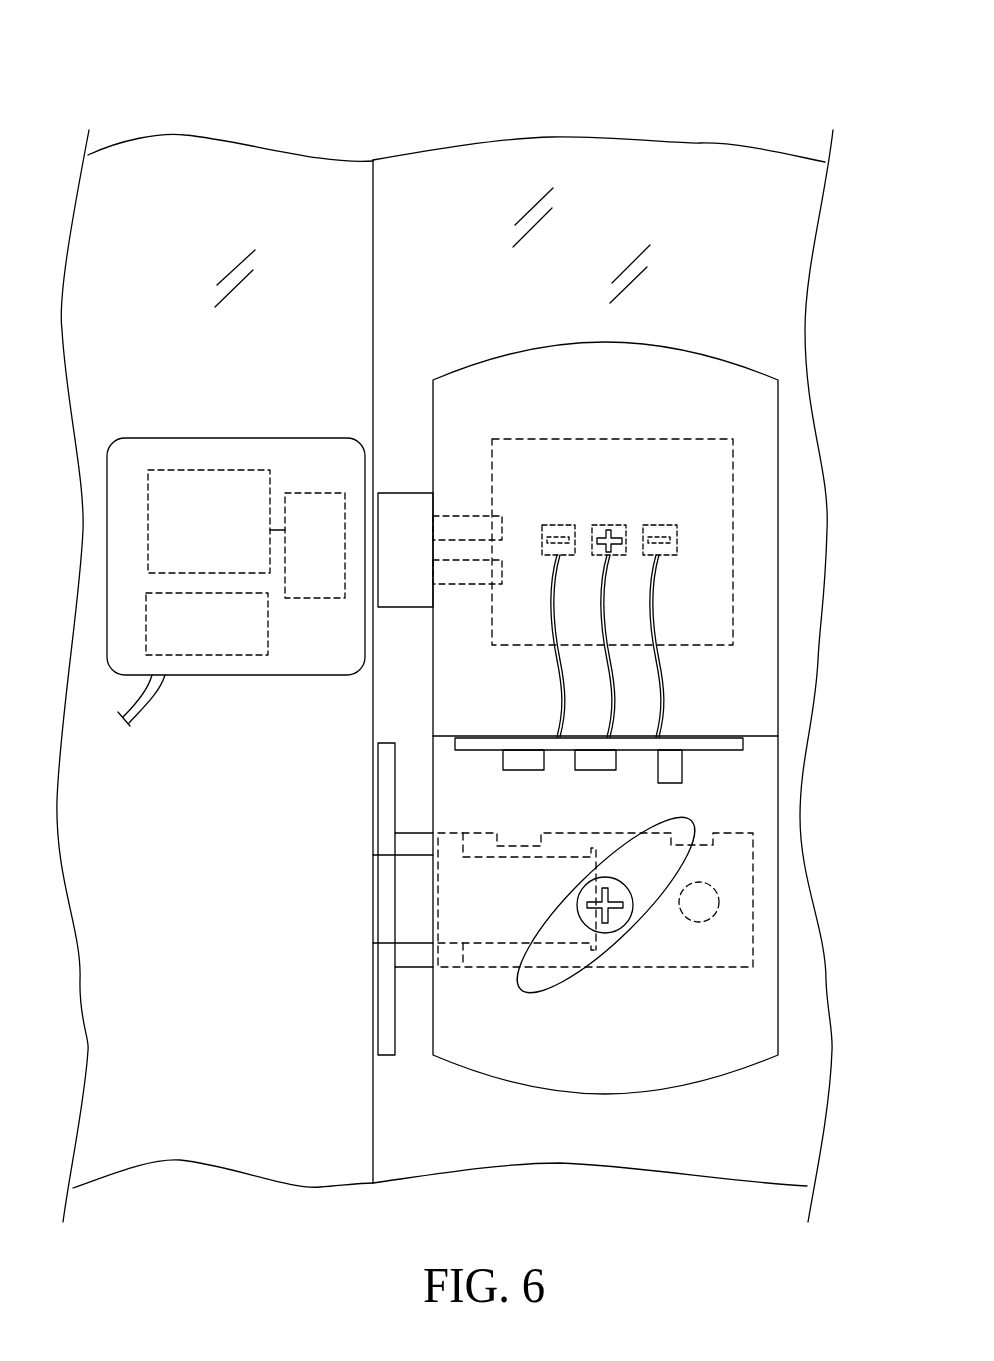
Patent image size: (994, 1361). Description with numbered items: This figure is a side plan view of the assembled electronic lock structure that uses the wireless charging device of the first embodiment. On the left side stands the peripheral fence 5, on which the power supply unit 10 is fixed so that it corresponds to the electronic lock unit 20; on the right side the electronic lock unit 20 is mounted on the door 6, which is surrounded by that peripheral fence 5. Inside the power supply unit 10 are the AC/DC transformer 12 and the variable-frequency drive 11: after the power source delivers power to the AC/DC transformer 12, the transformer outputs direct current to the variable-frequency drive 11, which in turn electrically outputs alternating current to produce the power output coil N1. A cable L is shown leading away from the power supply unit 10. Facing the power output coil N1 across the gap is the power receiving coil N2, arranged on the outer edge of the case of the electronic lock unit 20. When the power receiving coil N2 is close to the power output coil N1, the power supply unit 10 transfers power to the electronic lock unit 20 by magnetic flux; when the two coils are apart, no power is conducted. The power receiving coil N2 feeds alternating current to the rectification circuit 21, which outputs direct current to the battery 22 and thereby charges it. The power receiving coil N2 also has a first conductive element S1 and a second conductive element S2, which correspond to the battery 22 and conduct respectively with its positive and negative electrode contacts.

The peripheral fence 5 is at (247, 187).
The door 6 is at (563, 157).
The power supply unit 10 is at (235, 438).
The variable-frequency drive 11 is at (195, 505).
The AC/DC transformer 12 is at (213, 625).
The power output coil N1 is at (313, 580).
The power receiving coil N2 is at (402, 517).
The cable L is at (138, 708).
The electronic lock unit 20 is at (702, 360).
The rectification circuit 21 is at (660, 743).
The battery 22 is at (700, 535).
The first conductive element S1 is at (455, 530).
The second conductive element S2 is at (459, 570).